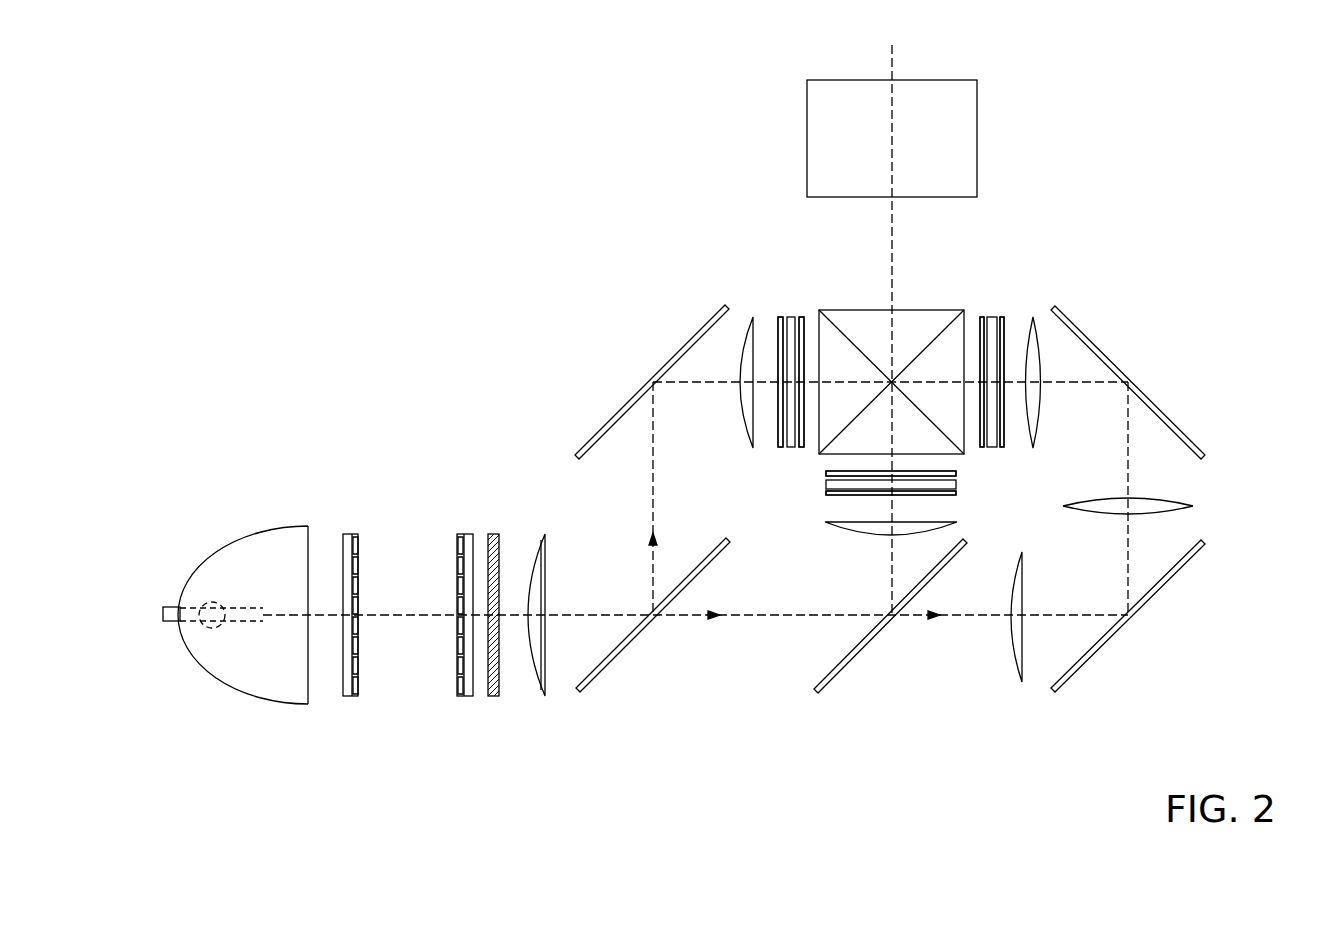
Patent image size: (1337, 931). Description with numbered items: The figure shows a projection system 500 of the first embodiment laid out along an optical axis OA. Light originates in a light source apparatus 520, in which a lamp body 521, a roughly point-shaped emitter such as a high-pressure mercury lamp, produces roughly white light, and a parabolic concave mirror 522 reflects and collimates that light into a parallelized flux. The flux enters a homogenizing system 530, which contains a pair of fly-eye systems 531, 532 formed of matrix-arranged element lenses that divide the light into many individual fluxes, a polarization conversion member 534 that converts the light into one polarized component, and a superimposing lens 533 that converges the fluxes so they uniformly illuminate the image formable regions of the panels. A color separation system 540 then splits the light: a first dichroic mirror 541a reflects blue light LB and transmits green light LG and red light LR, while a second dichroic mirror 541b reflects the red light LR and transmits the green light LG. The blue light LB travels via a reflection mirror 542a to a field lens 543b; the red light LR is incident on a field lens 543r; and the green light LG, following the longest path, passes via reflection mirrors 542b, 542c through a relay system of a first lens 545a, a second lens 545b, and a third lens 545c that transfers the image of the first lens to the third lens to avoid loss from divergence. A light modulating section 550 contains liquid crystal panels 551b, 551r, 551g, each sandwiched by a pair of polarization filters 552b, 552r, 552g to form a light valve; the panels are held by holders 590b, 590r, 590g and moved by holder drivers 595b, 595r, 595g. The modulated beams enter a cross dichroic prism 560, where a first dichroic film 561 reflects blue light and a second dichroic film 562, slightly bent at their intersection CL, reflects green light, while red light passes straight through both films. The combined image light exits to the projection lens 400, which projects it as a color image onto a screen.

The projection lens 400 is at (807, 137).
The projection system 500 is at (1211, 117).
The light source apparatus 520 is at (233, 615).
The lamp body 521 is at (213, 628).
The parabolic concave mirror 522 is at (262, 699).
The homogenizing system 530 is at (449, 675).
The fly-eye system 531 is at (348, 697).
The fly-eye system 532 is at (466, 697).
The superimposing lens 533 is at (547, 647).
The polarization conversion member 534 is at (493, 697).
The color separation system 540 is at (1134, 623).
The first dichroic mirror 541a is at (612, 657).
The second dichroic mirror 541b is at (848, 658).
The reflection mirror 542a is at (620, 410).
The reflection mirror 542b is at (1165, 585).
The reflection mirror 542c is at (1163, 407).
The field lens 543b is at (741, 422).
The field lens 543r is at (870, 535).
The first lens 545a is at (1012, 640).
The second lens 545b is at (1107, 515).
The third lens 545c is at (1043, 420).
The light modulating section 550 is at (868, 443).
The liquid crystal panel 551b is at (790, 317).
The liquid crystal panel 551g is at (993, 317).
The liquid crystal panel 551r is at (826, 484).
The polarization filters 552b is at (800, 450).
The polarization filters 552g is at (1000, 450).
The polarization filters 552r is at (957, 483).
The cross dichroic prism 560 is at (891, 346).
The first dichroic film 561 is at (948, 322).
The second dichroic film 562 is at (836, 320).
The holder 590b is at (763, 311).
The holder 590g is at (1025, 311).
The holder 590r is at (842, 590).
The holder driver 595b is at (758, 325).
The holder driver 595g is at (1029, 325).
The holder driver 595r is at (842, 581).
The optical axis OA is at (407, 612).
The intersection CL is at (891, 380).
The blue light LB is at (652, 490).
The red light LR is at (890, 592).
The green light LG is at (1130, 478).